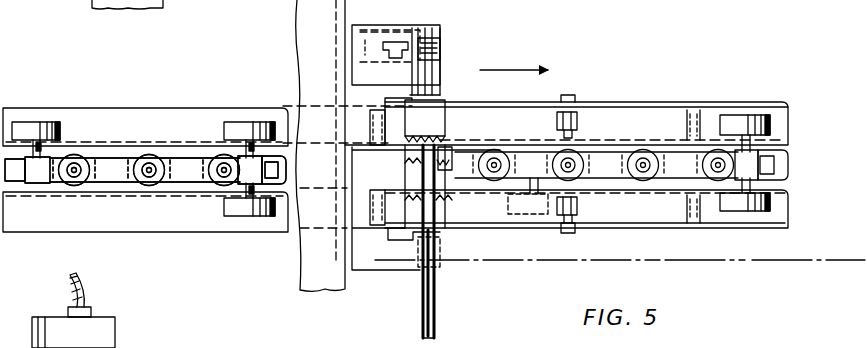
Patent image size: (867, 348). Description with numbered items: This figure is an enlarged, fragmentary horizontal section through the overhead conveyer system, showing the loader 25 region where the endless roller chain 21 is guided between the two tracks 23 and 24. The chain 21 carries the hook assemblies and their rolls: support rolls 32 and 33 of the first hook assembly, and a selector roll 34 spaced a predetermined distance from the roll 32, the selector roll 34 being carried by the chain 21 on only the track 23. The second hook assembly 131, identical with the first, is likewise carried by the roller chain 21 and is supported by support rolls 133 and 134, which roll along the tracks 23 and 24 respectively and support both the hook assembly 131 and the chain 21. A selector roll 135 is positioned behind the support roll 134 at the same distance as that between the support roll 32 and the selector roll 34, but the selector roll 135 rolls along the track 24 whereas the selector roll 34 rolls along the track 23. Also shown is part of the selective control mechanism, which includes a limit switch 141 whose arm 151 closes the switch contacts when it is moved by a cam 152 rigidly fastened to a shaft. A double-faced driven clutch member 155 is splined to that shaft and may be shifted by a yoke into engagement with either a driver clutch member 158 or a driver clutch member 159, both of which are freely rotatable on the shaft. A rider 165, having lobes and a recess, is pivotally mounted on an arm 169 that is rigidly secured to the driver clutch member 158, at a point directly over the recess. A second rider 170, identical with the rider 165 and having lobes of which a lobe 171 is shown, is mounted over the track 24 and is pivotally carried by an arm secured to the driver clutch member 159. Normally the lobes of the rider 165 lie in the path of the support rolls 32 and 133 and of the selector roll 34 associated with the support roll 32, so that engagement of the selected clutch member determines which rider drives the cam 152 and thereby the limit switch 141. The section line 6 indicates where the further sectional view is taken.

The section line 6- 6 is at (383, 263).
The endless roller chain 21 is at (611, 156).
The track 23 is at (180, 227).
The track 24 is at (118, 112).
The loader 25 is at (366, 294).
The support roll 32 is at (734, 206).
The support roll 33 is at (737, 118).
The selector roll 34 is at (560, 236).
The second hook assembly 131 is at (273, 250).
The support roll 133 is at (243, 208).
The support roll 134 is at (238, 127).
The selector roll 135 is at (28, 127).
The limit switch 141 is at (423, 40).
The arm 151 is at (400, 33).
The cam 152 is at (432, 52).
The double-faced driven clutch member 155 is at (446, 173).
The driver clutch member 158 is at (446, 220).
The driver clutch member 159 is at (438, 118).
The rider 165 is at (662, 210).
The arm 169 is at (492, 229).
The rider 170 is at (670, 114).
The lobe 171 is at (545, 100).